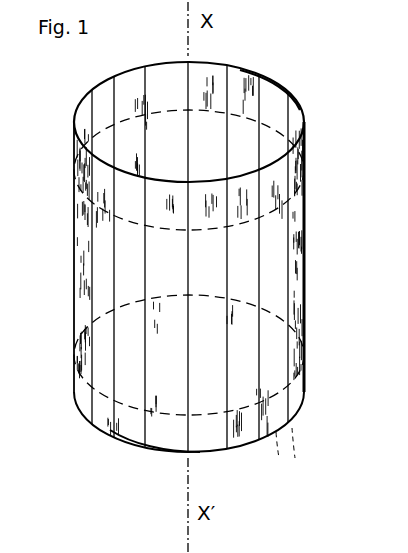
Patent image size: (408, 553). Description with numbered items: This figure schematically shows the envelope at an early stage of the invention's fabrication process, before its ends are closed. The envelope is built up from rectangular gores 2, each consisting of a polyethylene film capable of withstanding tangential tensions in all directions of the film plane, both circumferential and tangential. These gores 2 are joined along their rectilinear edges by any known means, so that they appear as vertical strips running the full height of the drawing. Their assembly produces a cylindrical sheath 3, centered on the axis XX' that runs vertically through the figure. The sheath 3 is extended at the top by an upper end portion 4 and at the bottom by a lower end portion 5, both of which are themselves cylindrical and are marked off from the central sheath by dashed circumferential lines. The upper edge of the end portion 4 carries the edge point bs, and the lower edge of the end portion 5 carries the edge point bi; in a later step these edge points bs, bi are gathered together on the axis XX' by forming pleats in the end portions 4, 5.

The rectangular gore 2 is at (239, 446).
The cylindrical sheath 3 is at (307, 294).
The upper end portion 4 is at (307, 176).
The lower end portion 5 is at (307, 390).
The upper edge point bs is at (273, 82).
The lower edge point bi is at (145, 450).